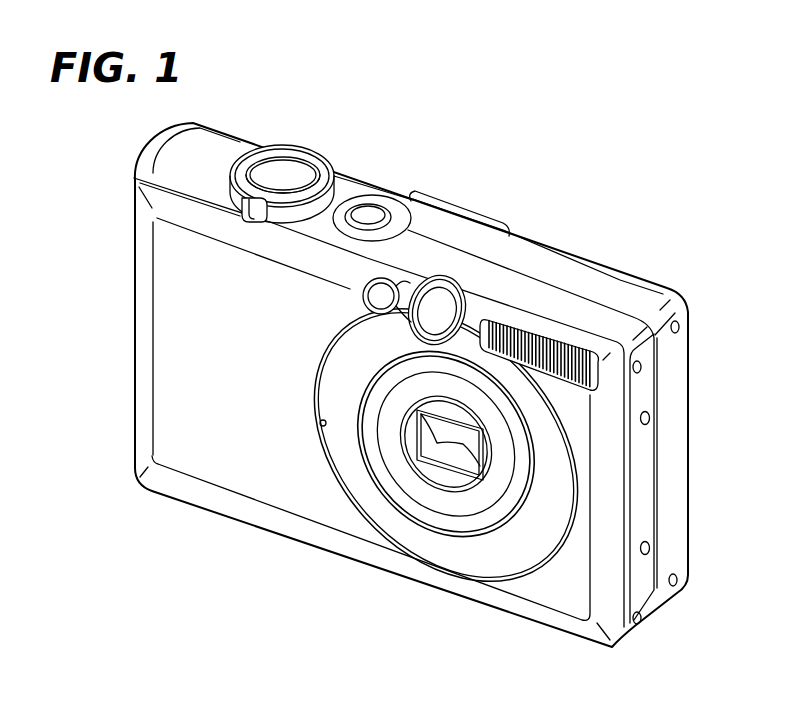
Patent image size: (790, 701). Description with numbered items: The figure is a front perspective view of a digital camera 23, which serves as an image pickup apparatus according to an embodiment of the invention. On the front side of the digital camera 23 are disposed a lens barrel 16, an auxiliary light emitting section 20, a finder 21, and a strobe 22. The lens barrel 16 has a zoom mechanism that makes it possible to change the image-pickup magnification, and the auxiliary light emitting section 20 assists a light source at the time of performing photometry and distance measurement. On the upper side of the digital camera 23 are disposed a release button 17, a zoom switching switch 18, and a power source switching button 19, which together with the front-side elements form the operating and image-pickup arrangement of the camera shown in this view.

The lens barrel 16 is at (447, 500).
The release button 17 is at (289, 163).
The zoom switching switch 18 is at (328, 170).
The power source switching button 19 is at (364, 213).
The auxiliary light emitting section 20 is at (383, 294).
The finder 21 is at (437, 310).
The strobe 22 is at (540, 340).
The digital camera 23 is at (244, 548).